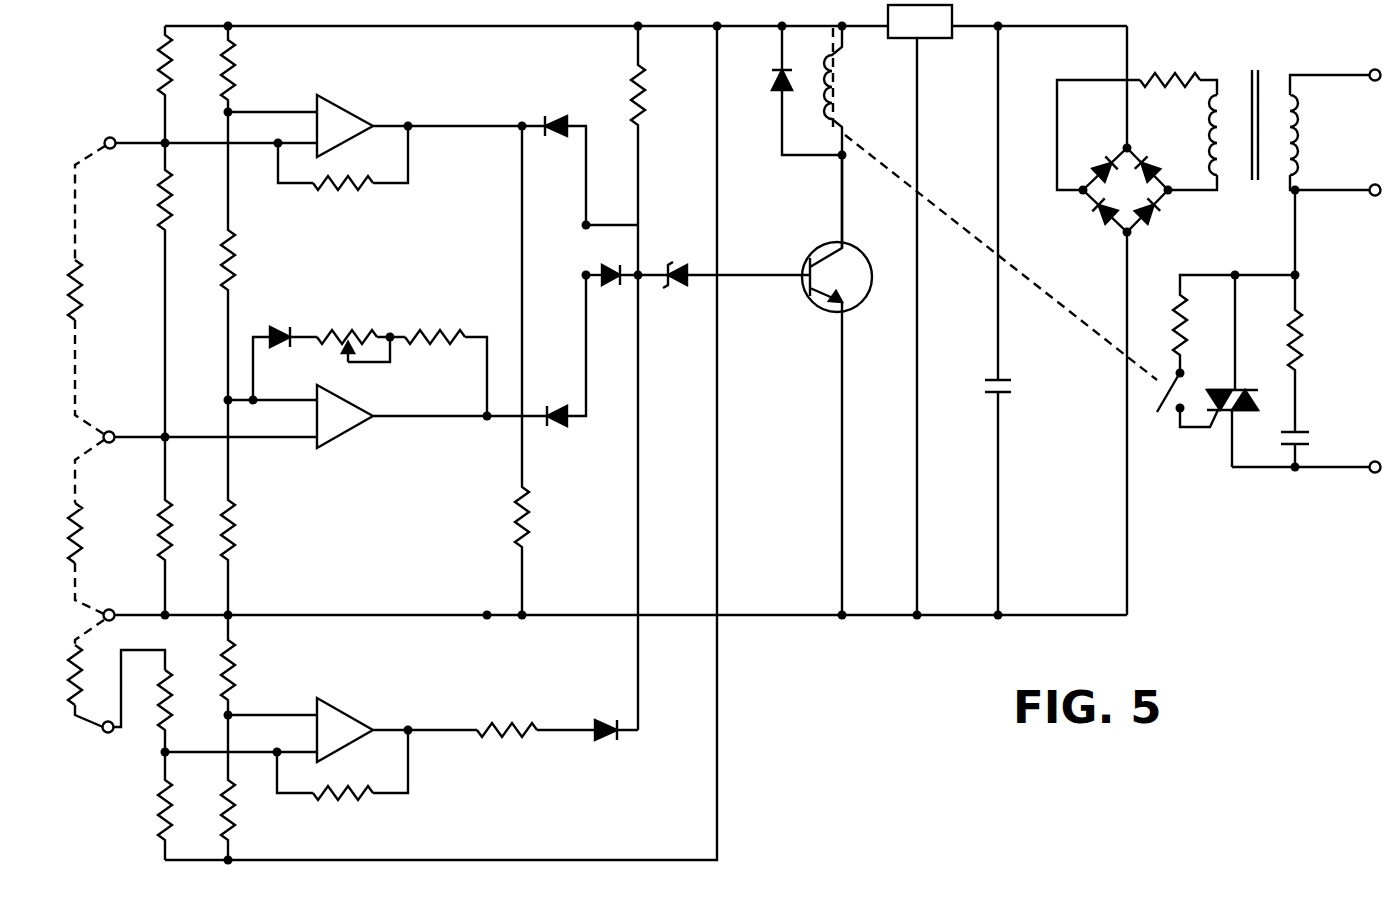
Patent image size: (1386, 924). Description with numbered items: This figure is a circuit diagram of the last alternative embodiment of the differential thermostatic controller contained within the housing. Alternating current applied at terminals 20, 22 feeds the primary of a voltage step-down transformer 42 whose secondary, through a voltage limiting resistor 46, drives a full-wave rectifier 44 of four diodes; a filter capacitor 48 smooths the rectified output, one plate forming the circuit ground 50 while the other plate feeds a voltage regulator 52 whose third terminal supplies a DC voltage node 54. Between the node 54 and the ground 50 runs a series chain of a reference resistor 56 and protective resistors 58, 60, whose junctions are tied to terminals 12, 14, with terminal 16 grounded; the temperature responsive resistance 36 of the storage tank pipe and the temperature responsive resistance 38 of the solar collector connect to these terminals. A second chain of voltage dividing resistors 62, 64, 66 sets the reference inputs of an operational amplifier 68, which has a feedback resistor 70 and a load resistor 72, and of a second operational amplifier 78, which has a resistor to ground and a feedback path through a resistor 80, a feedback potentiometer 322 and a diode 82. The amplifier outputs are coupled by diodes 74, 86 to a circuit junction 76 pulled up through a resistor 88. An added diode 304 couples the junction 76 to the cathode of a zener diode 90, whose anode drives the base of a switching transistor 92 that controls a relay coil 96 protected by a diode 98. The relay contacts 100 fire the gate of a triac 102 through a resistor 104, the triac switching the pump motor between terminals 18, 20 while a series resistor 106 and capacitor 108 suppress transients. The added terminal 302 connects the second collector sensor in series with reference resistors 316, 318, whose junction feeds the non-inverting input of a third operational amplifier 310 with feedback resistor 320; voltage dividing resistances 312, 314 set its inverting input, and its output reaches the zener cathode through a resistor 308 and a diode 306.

The terminal 12 is at (121, 127).
The terminal 14 is at (112, 432).
The terminal 16 is at (119, 598).
The terminal 18 is at (1376, 461).
The terminal 20 is at (1376, 184).
The terminal 22 is at (1369, 72).
The temperature responsive resistance 36 is at (84, 263).
The temperature responsive resistance 38 is at (73, 645).
The voltage step-down transformer 42 is at (1269, 116).
The full-wave rectifier 44 is at (1141, 155).
The voltage limiting resistor 46 is at (1188, 78).
The filter capacitor 48 is at (1008, 394).
The circuit ground 50 is at (1001, 613).
The voltage regulator 52 is at (936, 40).
The DC voltage node 54 is at (641, 30).
The reference resistor 56 is at (157, 63).
The protective resistor 58 is at (158, 193).
The protective resistor 60 is at (162, 508).
The voltage dividing resistor 62 is at (236, 62).
The voltage dividing resistor 64 is at (236, 262).
The voltage dividing resistor 66 is at (236, 506).
The operational amplifier 68 is at (346, 117).
The feedback resistor 70 is at (358, 192).
The resistor 72 is at (528, 500).
The diode 74 is at (564, 120).
The circuit junction 76 is at (584, 274).
The operational amplifier 78 is at (340, 440).
The feedback resistor 80 is at (462, 338).
The diode 82 is at (285, 350).
The diode 86 is at (568, 426).
The resistor 88 is at (643, 92).
The zener diode 90 is at (680, 268).
The switching transistor 92 is at (858, 262).
The relay coil 96 is at (840, 75).
The protective diode 98 is at (772, 78).
The relay contacts 100 is at (1173, 380).
The triac 102 is at (1216, 389).
The resistor 104 is at (1173, 328).
The resistor 106 is at (1303, 330).
The capacitor 108 is at (1306, 440).
The terminal 302 is at (104, 735).
The diode 304 is at (628, 255).
The diode 306 is at (606, 742).
The resistor 308 is at (506, 717).
The operational amplifier 310 is at (338, 718).
The voltage dividing resistance 312 is at (234, 665).
The voltage dividing resistance 314 is at (230, 822).
The reference resistor 316 is at (160, 818).
The reference resistor 318 is at (168, 690).
The feedback resistor 320 is at (352, 797).
The feedback potentiometer 322 is at (336, 336).